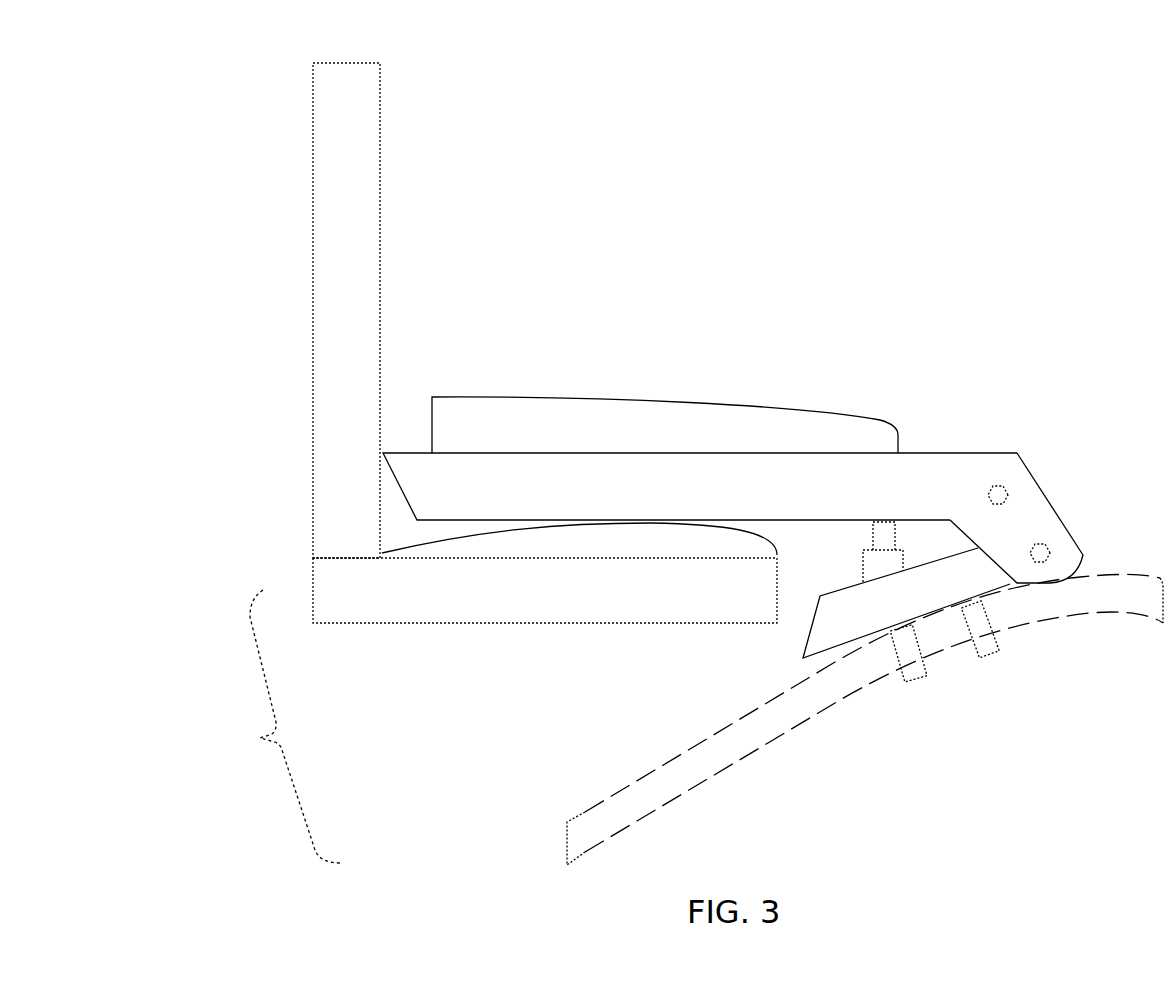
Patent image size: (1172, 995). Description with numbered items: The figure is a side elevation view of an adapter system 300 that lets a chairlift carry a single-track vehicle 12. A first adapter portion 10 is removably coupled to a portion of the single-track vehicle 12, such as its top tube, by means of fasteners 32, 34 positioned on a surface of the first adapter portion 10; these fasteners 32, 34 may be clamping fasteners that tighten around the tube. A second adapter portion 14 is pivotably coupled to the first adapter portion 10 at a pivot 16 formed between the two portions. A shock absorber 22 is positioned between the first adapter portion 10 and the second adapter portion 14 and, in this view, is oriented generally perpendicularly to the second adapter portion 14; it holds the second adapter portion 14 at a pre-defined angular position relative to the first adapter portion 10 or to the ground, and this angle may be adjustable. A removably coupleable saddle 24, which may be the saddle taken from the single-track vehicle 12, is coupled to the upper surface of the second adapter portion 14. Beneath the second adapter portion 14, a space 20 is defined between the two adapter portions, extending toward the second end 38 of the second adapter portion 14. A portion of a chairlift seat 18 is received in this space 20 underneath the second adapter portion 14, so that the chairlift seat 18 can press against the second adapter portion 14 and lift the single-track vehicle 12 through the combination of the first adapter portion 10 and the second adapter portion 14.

The adapter system 300 is at (178, 23).
The chairlift seat 18 is at (330, 45).
The space 20 is at (492, 710).
The second end of second adapter portion 38 is at (396, 432).
The second adapter portion 14 is at (1002, 452).
The pivot 16 is at (1075, 510).
The saddle 24 is at (577, 398).
The shock absorber 22 is at (883, 520).
The first adapter portion 10 is at (810, 658).
The single-track vehicle 12 is at (590, 795).
The fastener 32 is at (917, 683).
The fastener 34 is at (987, 658).